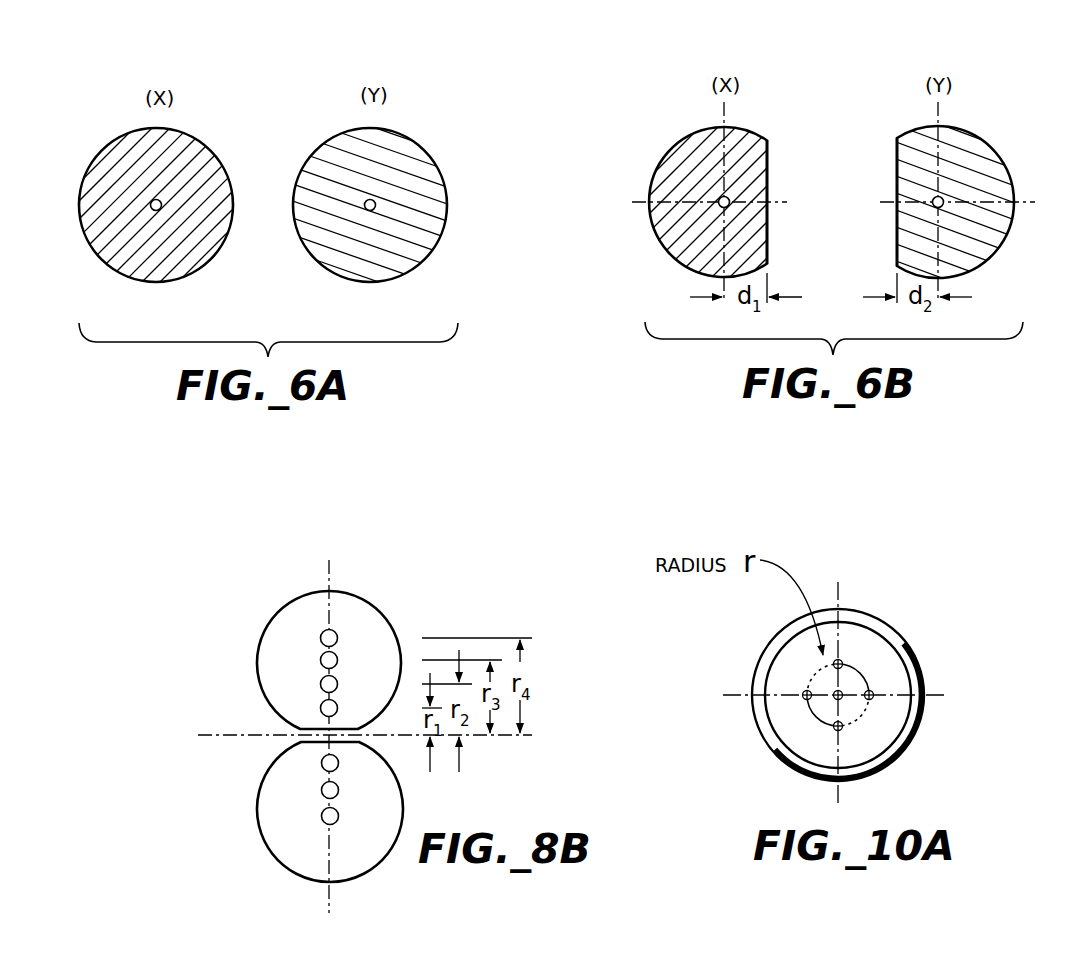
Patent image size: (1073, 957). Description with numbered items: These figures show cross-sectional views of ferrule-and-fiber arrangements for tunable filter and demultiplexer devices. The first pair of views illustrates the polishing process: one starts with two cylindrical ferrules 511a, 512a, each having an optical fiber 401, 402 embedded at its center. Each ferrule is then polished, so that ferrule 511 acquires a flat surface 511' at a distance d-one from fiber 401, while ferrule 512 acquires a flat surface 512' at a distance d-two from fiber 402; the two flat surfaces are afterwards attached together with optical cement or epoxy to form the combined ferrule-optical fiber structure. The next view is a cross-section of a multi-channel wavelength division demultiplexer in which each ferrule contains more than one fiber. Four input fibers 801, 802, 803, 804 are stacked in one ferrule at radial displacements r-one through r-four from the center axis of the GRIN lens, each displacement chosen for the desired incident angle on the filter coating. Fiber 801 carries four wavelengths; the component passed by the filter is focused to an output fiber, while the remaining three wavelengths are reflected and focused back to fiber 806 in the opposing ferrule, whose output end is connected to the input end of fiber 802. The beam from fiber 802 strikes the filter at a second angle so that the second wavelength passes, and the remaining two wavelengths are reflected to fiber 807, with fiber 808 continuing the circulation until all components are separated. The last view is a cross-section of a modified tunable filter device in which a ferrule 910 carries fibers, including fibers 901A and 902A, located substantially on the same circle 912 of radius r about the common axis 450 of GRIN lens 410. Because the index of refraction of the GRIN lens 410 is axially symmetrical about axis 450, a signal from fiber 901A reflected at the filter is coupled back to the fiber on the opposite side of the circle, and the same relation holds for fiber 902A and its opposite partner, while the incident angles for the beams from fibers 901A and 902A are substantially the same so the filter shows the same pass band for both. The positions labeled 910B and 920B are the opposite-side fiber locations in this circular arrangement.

In FIG. 6A, the cylindrical ferrule 511a is at (187, 134).
In FIG. 6A, the cylindrical ferrule 512a is at (397, 132).
In FIG. 6A, the optical fiber 401 is at (158, 198).
In FIG. 6B, the optical fiber 401 is at (718, 205).
In FIG. 6A, the optical fiber 402 is at (370, 212).
In FIG. 6B, the optical fiber 402 is at (945, 206).
In FIG. 6B, the polished ferrule 511 is at (717, 179).
In FIG. 6B, the flat surface 511' is at (811, 187).
In FIG. 6B, the polished ferrule 512 is at (953, 184).
In FIG. 6B, the flat surface 512' is at (856, 202).
In FIG. 8B, the input fiber 801 is at (320, 708).
In FIG. 8B, the input fiber 802 is at (320, 684).
In FIG. 8B, the input fiber 803 is at (320, 660).
In FIG. 8B, the input fiber 804 is at (320, 638).
In FIG. 8B, the fiber 806 is at (321, 763).
In FIG. 8B, the fiber 807 is at (321, 790).
In FIG. 8B, the fiber 808 is at (321, 816).
In FIG. 10A, the GRIN lens 410 is at (776, 614).
In FIG. 10A, the common center line or axis 450 is at (848, 685).
In FIG. 10A, the fiber 901A is at (846, 648).
In FIG. 10A, the fiber 902A is at (878, 704).
In FIG. 10A, the ferrule 910 is at (868, 770).
In FIG. 10A, the bottom orifice 910B is at (832, 740).
In FIG. 10A, the circle 912 is at (860, 729).
In FIG. 10A, the left orifice 920B is at (798, 709).